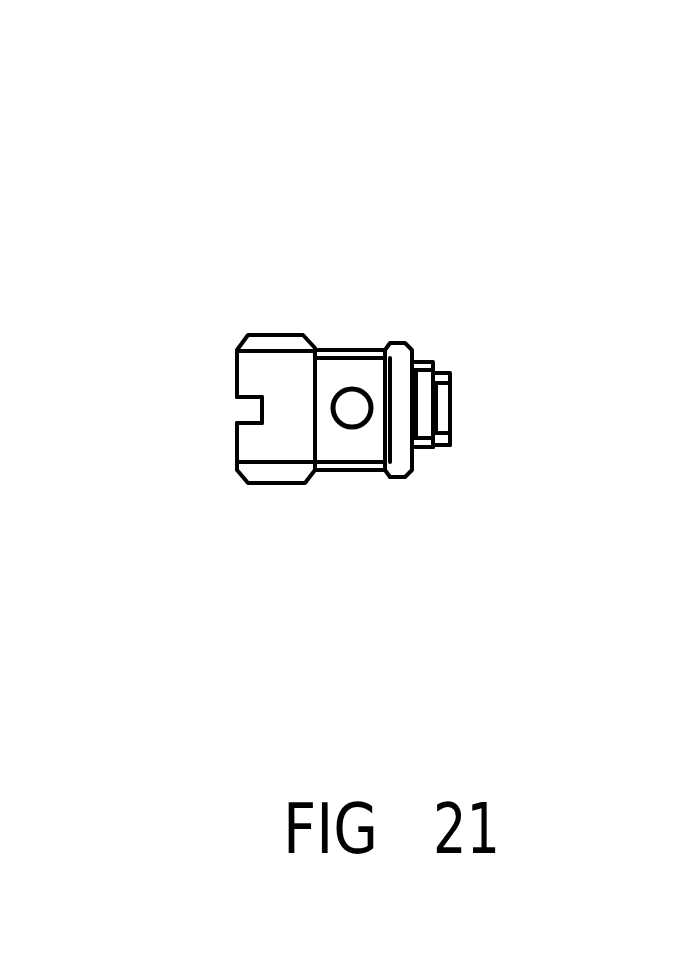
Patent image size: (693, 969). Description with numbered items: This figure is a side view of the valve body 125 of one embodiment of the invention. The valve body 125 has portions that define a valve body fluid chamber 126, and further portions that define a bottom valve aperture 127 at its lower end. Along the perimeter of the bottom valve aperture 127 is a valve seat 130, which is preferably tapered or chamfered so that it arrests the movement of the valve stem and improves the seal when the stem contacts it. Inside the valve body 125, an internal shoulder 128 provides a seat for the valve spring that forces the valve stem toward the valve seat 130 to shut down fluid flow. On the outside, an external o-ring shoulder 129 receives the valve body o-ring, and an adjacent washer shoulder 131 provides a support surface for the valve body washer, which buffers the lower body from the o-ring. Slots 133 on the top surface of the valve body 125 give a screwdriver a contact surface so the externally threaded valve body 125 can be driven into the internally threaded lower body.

The valve body 125 is at (342, 412).
The valve body fluid chamber 126 is at (160, 401).
The bottom valve aperture 127 is at (547, 379).
The internal shoulder 128 is at (545, 570).
The external o-ring shoulder 129 is at (526, 293).
The valve seat 130 is at (553, 512).
The washer shoulder 131 is at (536, 323).
The slots 133 is at (134, 519).